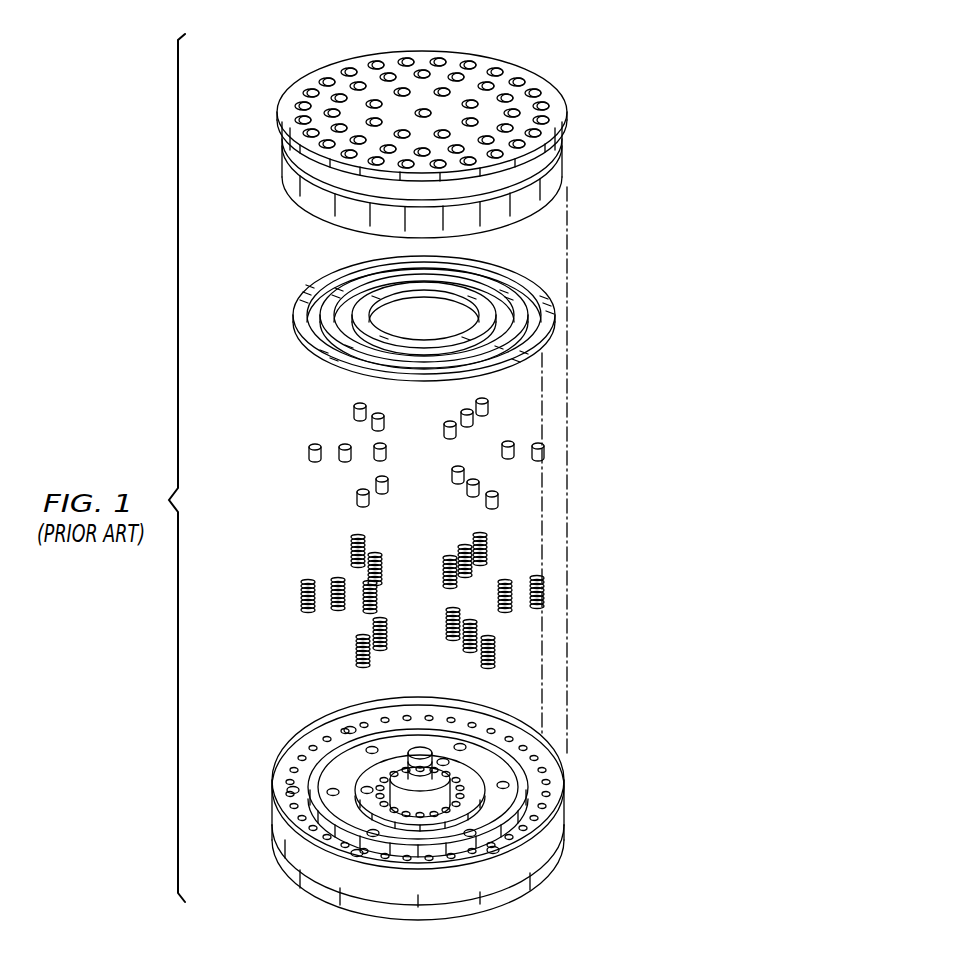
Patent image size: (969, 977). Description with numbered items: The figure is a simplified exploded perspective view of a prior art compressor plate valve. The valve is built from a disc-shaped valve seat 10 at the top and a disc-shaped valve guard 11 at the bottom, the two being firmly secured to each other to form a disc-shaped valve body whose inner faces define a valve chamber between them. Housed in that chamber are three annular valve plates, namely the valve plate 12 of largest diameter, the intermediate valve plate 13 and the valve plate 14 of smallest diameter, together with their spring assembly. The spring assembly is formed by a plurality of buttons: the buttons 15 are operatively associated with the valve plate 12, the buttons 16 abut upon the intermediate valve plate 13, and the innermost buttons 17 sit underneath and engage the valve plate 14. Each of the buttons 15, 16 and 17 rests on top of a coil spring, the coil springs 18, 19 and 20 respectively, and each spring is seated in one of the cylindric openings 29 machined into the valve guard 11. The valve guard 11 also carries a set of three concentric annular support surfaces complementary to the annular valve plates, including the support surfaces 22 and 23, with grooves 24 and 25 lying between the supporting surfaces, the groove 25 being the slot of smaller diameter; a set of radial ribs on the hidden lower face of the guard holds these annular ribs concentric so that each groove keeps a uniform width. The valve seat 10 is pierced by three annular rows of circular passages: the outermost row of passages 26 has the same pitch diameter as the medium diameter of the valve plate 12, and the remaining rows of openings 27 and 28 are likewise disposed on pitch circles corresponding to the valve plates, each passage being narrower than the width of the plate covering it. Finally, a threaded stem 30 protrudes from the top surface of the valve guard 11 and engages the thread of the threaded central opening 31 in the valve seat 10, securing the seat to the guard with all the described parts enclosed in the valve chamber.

The valve seat 10 is at (582, 154).
The valve guard 11 is at (260, 860).
The valve plate 12 is at (295, 311).
The intermediate valve plate 13 is at (335, 330).
The valve plate 14 is at (382, 329).
The buttons 15 is at (353, 412).
The buttons 16 is at (425, 405).
The innermost buttons 17 is at (452, 474).
The coil springs 18 is at (308, 580).
The coil springs 19 is at (460, 549).
The coil springs 20 is at (449, 624).
The support surface 22 is at (347, 763).
The support surface 23 is at (397, 758).
The groove 24 is at (457, 735).
The groove 25 is at (488, 793).
The passages 26 is at (322, 85).
The openings 27 is at (377, 80).
The openings 28 is at (409, 92).
The cylindric openings 29 is at (361, 789).
The threaded stem 30 is at (414, 750).
The threaded central opening 31 is at (425, 112).